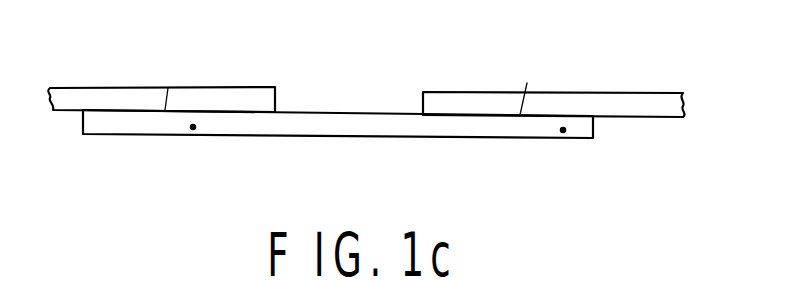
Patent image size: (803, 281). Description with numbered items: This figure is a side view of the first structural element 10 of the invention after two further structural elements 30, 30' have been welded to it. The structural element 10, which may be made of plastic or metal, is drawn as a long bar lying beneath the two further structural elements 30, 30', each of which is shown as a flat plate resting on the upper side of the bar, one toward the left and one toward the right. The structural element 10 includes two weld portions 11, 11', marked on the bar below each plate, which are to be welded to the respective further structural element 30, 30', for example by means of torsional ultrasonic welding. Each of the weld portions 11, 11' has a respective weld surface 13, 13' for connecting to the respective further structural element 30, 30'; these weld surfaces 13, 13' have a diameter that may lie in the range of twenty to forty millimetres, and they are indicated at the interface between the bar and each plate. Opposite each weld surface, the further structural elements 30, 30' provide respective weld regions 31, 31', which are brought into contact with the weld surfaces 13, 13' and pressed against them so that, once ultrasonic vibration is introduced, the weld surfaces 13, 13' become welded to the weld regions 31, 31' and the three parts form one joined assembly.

The first structural element 10 is at (350, 130).
The further structural element 30 is at (161, 77).
The weld surface 13 is at (209, 73).
The weld region 31 is at (161, 158).
The weld portion 11 is at (206, 167).
The further structural element 30' is at (578, 79).
The weld surface 13' is at (551, 75).
The weld region 31' is at (494, 164).
The weld portion 11' is at (561, 169).